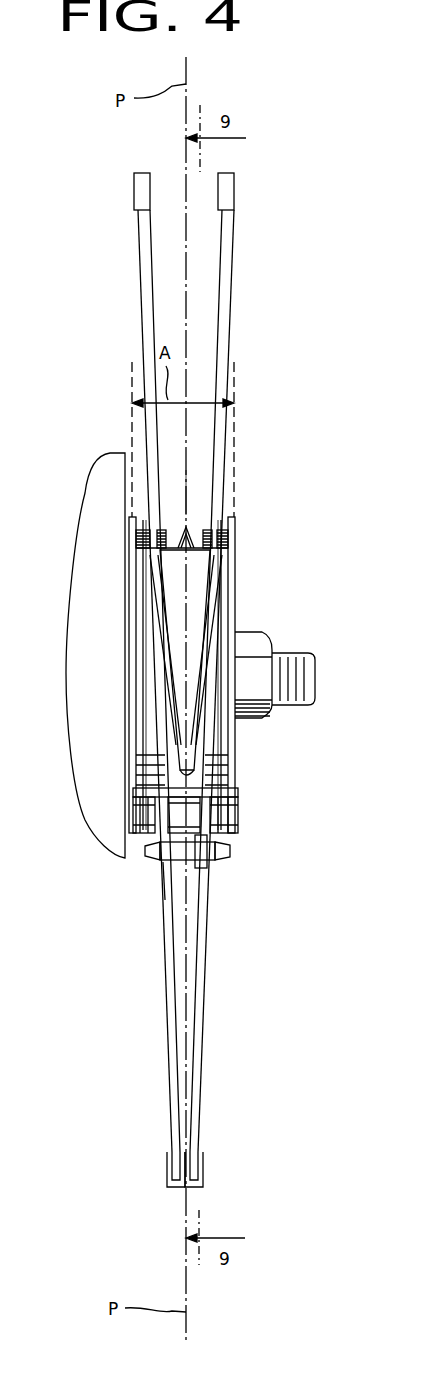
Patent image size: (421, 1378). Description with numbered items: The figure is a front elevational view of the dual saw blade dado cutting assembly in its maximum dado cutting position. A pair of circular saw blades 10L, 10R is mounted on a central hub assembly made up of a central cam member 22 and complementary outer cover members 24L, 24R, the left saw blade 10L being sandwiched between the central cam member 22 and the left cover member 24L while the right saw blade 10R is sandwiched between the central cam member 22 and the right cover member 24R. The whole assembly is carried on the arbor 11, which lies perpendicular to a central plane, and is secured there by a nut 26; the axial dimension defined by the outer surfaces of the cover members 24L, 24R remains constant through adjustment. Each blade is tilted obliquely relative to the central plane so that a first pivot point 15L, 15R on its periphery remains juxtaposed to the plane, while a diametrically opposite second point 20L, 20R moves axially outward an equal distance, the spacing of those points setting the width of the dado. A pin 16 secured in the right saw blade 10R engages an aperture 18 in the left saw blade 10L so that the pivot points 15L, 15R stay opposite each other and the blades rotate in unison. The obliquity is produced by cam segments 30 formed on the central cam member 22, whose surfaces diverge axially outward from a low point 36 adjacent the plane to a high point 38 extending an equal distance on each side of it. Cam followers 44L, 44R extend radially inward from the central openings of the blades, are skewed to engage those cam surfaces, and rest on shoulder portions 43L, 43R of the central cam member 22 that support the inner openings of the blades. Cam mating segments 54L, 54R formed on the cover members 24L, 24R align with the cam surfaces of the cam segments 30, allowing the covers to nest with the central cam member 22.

The left circular saw blade 10L is at (136, 271).
The right circular saw blade 10R is at (234, 258).
The arbor 11 is at (298, 653).
The left pivot point 15L is at (185, 1188).
The right pivot point 15R is at (185, 1188).
The pin 16 is at (190, 862).
The aperture 18 is at (162, 865).
The left second point 20L is at (134, 176).
The right second point 20R is at (234, 176).
The central cam member 22 is at (194, 490).
The left outer cover member 24L is at (130, 524).
The right outer cover member 24R is at (236, 523).
The nut 26 is at (265, 633).
The cam segment 30 is at (200, 592).
The low point 36 is at (190, 525).
The high point 38 is at (168, 530).
The left shoulder portion 43L is at (172, 748).
The right shoulder portion 43R is at (190, 748).
The left cam follower 44L is at (143, 549).
The right cam follower 44R is at (225, 553).
The left cam mating segment 54L is at (143, 702).
The right cam mating segment 54R is at (225, 770).